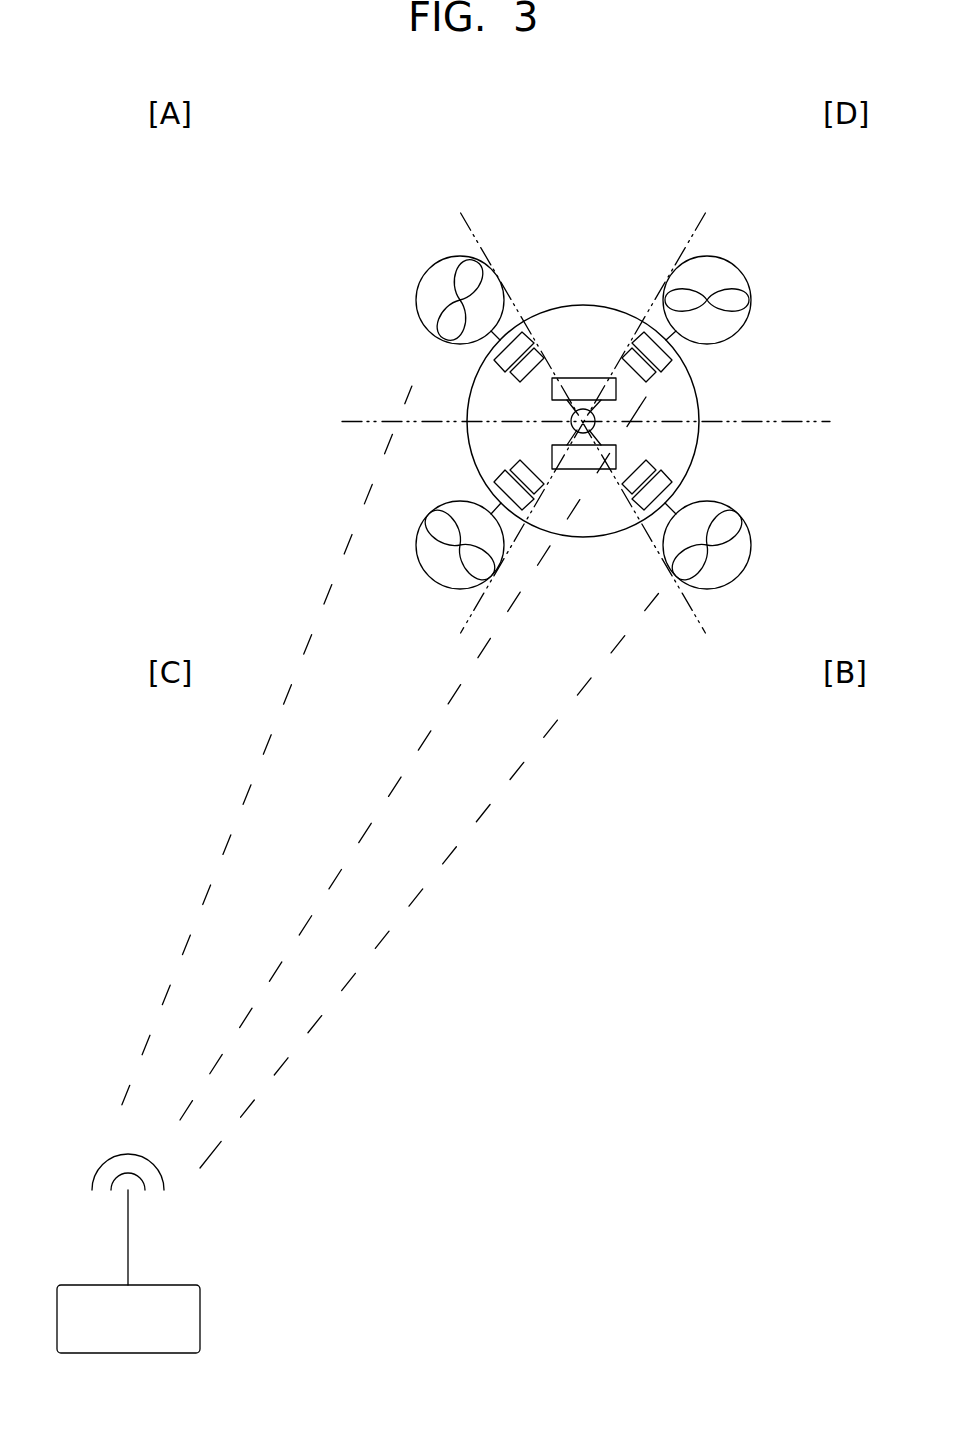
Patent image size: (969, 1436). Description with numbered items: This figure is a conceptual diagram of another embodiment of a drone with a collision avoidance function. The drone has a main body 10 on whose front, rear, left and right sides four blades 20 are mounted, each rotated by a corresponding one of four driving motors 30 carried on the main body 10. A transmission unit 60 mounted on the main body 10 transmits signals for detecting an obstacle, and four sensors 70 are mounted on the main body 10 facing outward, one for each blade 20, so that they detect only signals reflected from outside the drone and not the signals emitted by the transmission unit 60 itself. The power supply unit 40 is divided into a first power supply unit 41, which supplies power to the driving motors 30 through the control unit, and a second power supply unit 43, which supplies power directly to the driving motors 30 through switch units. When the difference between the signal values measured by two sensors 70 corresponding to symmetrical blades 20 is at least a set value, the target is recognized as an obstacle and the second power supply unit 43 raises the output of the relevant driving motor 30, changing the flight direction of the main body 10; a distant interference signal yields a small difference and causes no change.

The main body 10 is at (700, 402).
The blades 20 is at (452, 298).
The driving motors 30 is at (533, 352).
The power supply unit 40 is at (539, 422).
The first power supply unit 41 is at (551, 388).
The second power supply unit 43 is at (558, 450).
The transmission unit 60 is at (580, 433).
The sensors 70 is at (484, 370).